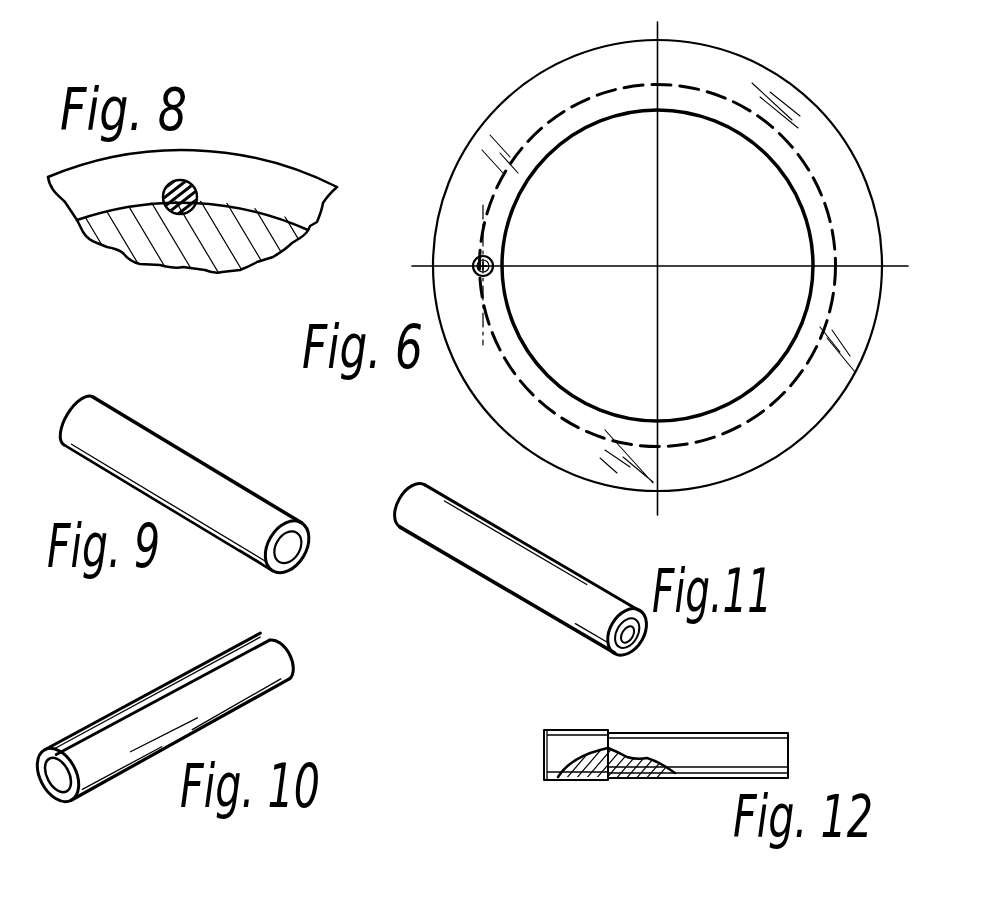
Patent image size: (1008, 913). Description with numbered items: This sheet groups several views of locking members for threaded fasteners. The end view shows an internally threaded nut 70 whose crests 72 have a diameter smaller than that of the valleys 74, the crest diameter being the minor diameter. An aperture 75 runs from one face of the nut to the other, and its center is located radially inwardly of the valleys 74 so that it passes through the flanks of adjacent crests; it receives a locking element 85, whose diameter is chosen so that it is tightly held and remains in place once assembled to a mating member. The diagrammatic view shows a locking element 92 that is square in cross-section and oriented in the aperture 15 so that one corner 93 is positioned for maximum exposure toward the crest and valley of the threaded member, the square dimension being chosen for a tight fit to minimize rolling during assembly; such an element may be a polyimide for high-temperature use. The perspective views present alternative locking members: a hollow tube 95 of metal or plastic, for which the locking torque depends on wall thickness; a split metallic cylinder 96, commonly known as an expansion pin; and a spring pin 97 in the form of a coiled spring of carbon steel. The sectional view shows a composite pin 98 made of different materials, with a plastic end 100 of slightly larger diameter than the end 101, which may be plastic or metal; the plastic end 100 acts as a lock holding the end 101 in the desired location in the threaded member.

In FIG. 8, the aperture 15 is at (168, 209).
In FIG. 6, the internally threaded nut 70 is at (562, 78).
In FIG. 6, the crests 72 is at (517, 212).
In FIG. 6, the valleys 74 is at (563, 113).
In FIG. 6, the aperture 75 is at (496, 262).
In FIG. 6, the locking element 85 is at (490, 276).
In FIG. 8, the locking element 92 is at (197, 181).
In FIG. 8, the corner 93 is at (183, 179).
In FIG. 9, the hollow tube 95 is at (207, 453).
In FIG. 10, the split metallic cylinder 96 is at (149, 685).
In FIG. 11, the spring pin 97 is at (473, 581).
In FIG. 12, the plug assembly 98 is at (671, 730).
In FIG. 12, the plastic end 100 is at (557, 748).
In FIG. 12, the end 101 is at (772, 760).